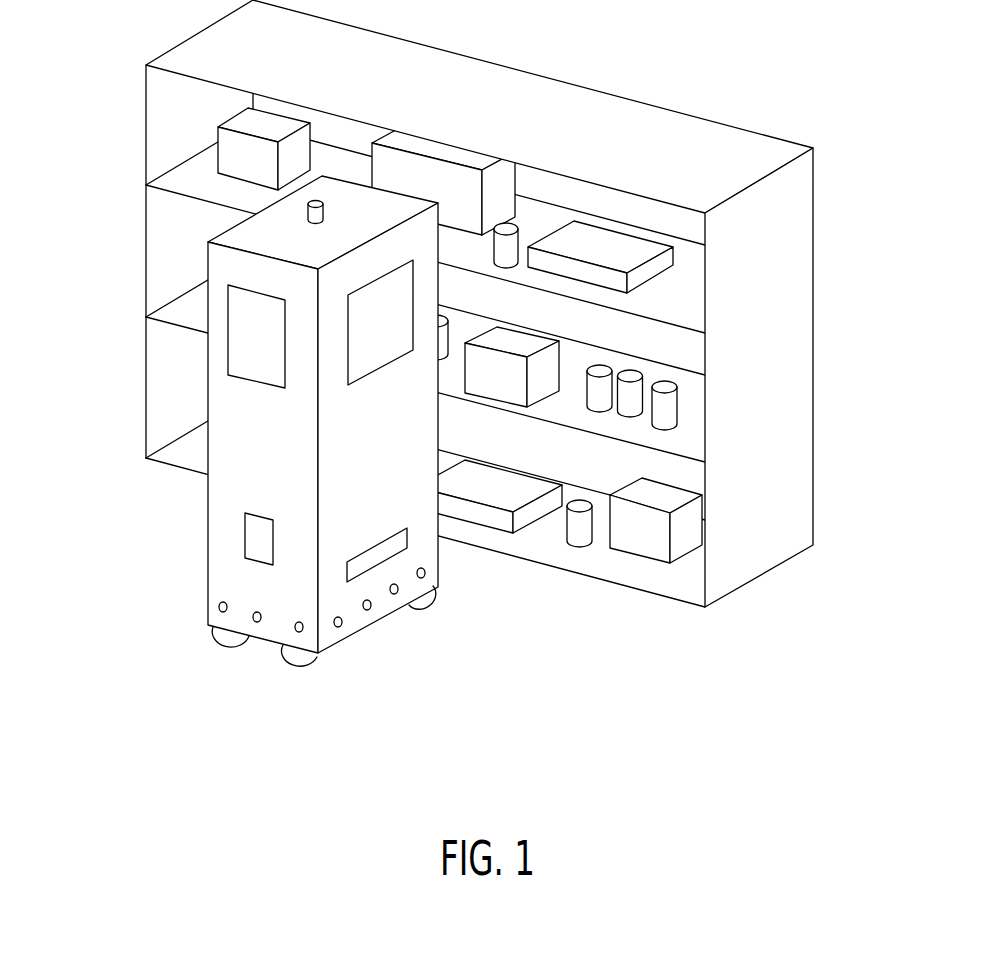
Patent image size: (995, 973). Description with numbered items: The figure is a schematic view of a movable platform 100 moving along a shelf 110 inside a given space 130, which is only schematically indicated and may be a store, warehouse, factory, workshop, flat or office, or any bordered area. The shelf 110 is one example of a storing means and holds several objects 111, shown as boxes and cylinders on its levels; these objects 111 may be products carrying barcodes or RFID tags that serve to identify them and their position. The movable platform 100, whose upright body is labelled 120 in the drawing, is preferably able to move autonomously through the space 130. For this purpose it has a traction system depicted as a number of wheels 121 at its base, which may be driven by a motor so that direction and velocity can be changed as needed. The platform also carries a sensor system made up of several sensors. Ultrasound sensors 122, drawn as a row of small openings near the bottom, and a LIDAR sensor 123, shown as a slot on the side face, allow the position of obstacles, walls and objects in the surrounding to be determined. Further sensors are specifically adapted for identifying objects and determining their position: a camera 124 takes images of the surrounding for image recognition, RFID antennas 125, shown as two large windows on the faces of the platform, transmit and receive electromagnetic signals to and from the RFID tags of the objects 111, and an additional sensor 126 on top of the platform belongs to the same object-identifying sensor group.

The movable platform 100 is at (98, 496).
The shelf 110 is at (512, 327).
The objects 111 is at (668, 412).
The mobile robot 120 is at (285, 445).
The wheels 121 is at (221, 644).
The ultrasound sensor 122 is at (338, 626).
The LIDAR sensor 123 is at (395, 547).
The camera 124 is at (250, 547).
The RFID antenna 125 is at (355, 348).
The object-identifying sensor 126 is at (308, 206).
The given space 130 is at (763, 650).